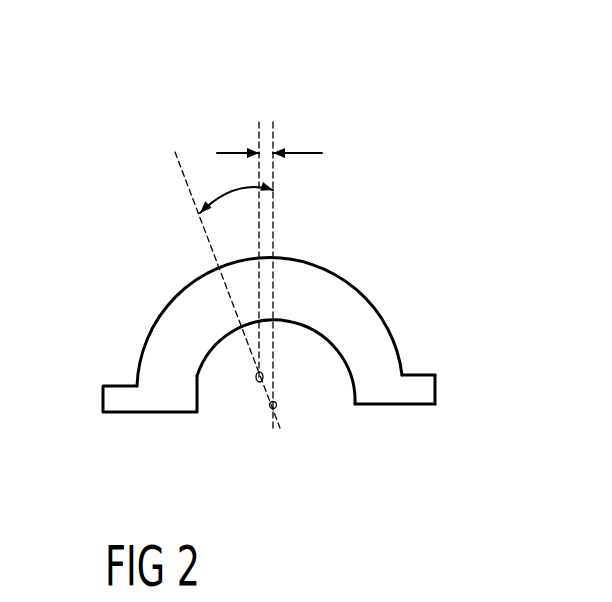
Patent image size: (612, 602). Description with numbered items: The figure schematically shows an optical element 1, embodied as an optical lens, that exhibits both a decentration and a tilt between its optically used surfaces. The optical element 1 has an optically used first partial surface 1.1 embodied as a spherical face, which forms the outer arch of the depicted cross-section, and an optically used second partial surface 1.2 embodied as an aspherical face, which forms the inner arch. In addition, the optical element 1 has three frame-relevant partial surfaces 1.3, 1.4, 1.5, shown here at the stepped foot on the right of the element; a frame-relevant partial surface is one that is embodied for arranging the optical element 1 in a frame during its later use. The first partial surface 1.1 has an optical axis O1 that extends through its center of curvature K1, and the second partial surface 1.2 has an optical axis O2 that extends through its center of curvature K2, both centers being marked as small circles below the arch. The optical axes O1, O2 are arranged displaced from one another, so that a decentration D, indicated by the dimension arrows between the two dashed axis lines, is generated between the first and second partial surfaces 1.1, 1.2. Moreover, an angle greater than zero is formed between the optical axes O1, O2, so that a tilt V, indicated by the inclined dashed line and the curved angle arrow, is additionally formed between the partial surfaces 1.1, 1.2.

The optical element 1 is at (104, 208).
The first optically used partial surface 1.1 is at (383, 318).
The second optically used partial surface 1.2 is at (338, 367).
The frame-relevant partial surface 1.3 is at (420, 375).
The frame-relevant partial surface 1.4 is at (437, 392).
The frame-relevant partial surface 1.5 is at (393, 405).
The optical axis O1 is at (273, 207).
The optical axis O2 is at (200, 222).
The tilt V is at (218, 198).
The decentration D is at (265, 137).
The center of curvature K1 is at (272, 410).
The center of curvature K2 is at (257, 382).